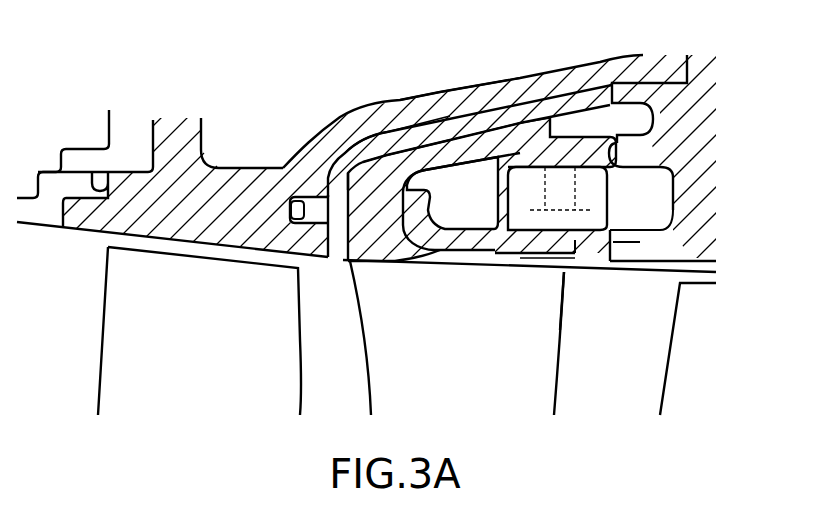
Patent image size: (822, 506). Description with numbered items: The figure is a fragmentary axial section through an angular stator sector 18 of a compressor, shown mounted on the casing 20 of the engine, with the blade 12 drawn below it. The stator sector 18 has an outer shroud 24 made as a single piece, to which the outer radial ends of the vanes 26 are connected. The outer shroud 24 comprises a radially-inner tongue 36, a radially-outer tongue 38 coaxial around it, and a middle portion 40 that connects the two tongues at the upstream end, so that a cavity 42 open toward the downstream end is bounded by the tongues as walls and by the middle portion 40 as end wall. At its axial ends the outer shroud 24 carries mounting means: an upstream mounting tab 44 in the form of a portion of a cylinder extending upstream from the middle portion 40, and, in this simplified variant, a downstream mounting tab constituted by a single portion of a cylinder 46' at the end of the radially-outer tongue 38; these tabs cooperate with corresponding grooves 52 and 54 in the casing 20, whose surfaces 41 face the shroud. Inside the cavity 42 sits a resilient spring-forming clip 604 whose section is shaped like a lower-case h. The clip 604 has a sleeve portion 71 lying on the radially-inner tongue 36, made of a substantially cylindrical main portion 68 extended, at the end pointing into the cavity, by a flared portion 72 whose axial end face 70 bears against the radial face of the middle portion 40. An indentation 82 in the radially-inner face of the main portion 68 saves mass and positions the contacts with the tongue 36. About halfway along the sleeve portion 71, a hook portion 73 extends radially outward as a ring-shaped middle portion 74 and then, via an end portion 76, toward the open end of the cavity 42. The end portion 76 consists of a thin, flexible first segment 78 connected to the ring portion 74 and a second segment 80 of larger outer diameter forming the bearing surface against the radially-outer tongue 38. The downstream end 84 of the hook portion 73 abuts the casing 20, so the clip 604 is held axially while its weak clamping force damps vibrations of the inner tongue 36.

The upstream blade 12 is at (120, 366).
The stator sector 18 is at (565, 393).
The casing 20 is at (243, 190).
The outer shroud 24 is at (420, 118).
The radial vane 26 is at (560, 352).
The radially-inner tongue 36 is at (473, 263).
The radially-outer tongue 38 is at (472, 142).
The middle portion 40 is at (307, 150).
The hook upper surface 41 is at (360, 150).
The cavity 42 is at (420, 137).
The upstream mounting tab 44 is at (277, 250).
The single portion of a cylinder 46' is at (652, 60).
The groove 52 is at (290, 199).
The groove 54 is at (680, 107).
The main portion 68 is at (502, 253).
The axial end face 70 is at (362, 228).
The sleeve portion 71 is at (687, 233).
The flared portion 72 is at (406, 248).
The hook portion 73 is at (494, 128).
The middle portion 74 is at (505, 200).
The end portion 76 is at (543, 150).
The first segment 78 is at (546, 250).
The second segment 80 is at (593, 190).
The indentation 82 is at (580, 257).
The downstream end 84 is at (680, 158).
The resilient spring-forming clip 604 is at (680, 215).